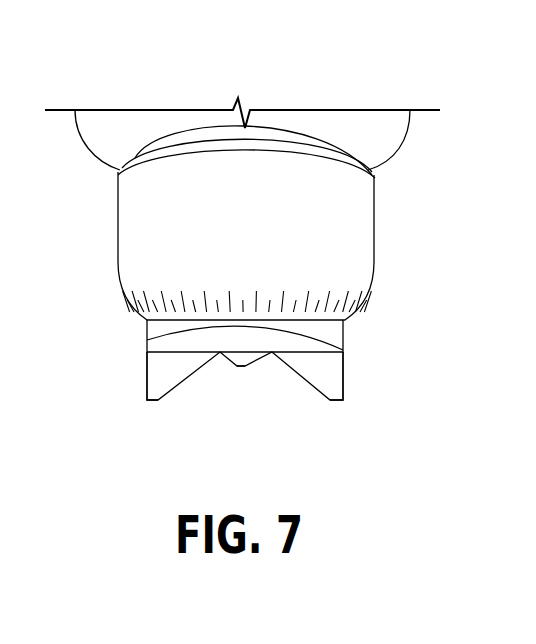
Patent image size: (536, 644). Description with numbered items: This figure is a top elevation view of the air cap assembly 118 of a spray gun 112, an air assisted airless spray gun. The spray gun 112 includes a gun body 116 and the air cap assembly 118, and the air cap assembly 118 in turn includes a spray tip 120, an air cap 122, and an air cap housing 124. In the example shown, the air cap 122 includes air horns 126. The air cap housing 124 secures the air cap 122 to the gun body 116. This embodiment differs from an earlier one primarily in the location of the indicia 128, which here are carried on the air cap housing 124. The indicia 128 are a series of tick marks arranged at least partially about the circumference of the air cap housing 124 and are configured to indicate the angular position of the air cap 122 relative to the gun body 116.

The spray gun 112 is at (317, 72).
The gun body 116 is at (165, 113).
The air cap assembly 118 is at (217, 408).
The spray tip 120 is at (248, 372).
The air cap 122 is at (157, 338).
The air cap housing 124 is at (373, 258).
The air horns 126 is at (157, 370).
The indicia 128 is at (170, 258).